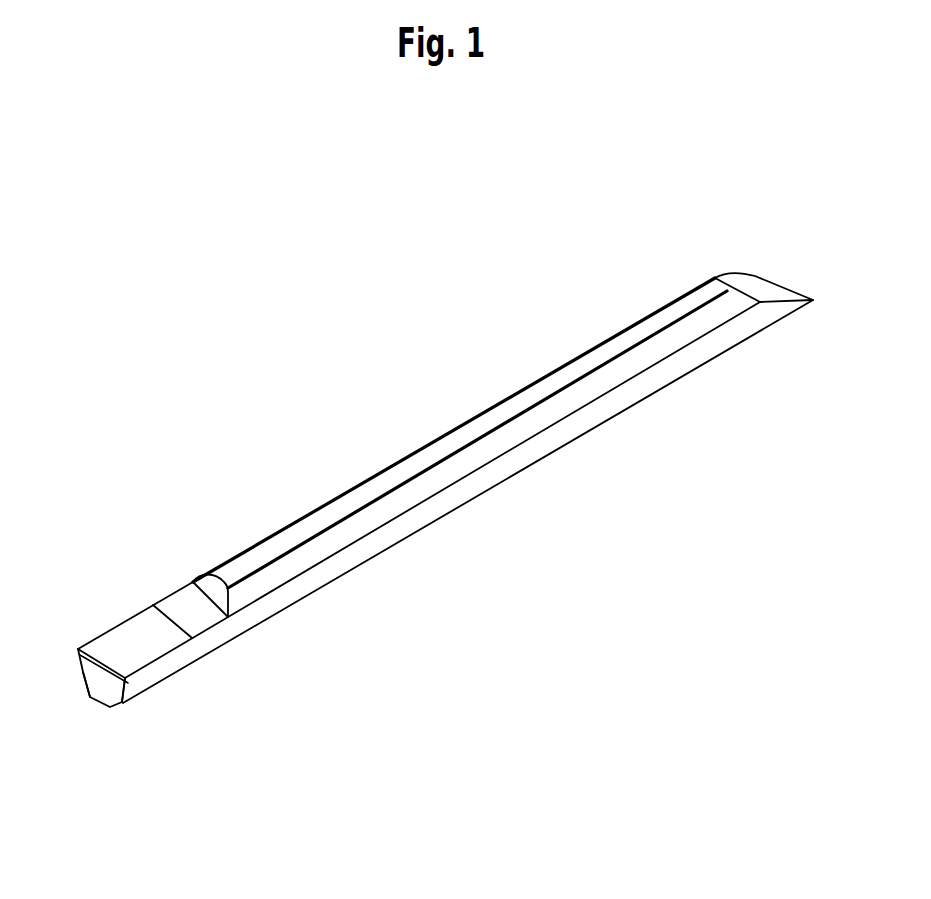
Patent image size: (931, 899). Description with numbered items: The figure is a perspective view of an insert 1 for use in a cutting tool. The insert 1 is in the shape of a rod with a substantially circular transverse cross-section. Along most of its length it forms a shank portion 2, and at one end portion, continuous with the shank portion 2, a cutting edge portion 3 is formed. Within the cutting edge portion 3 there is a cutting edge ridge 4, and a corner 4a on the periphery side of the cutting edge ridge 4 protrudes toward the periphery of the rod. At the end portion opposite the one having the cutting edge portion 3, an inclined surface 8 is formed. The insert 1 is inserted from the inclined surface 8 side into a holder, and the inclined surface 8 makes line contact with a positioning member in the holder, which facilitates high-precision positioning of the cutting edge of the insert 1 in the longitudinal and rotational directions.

The insert 1 is at (259, 402).
The shank portion 2 is at (374, 480).
The cutting edge portion 3 is at (73, 634).
The cutting edge ridge 4 is at (95, 693).
The corner 4a is at (132, 688).
The inclined surface 8 is at (760, 287).